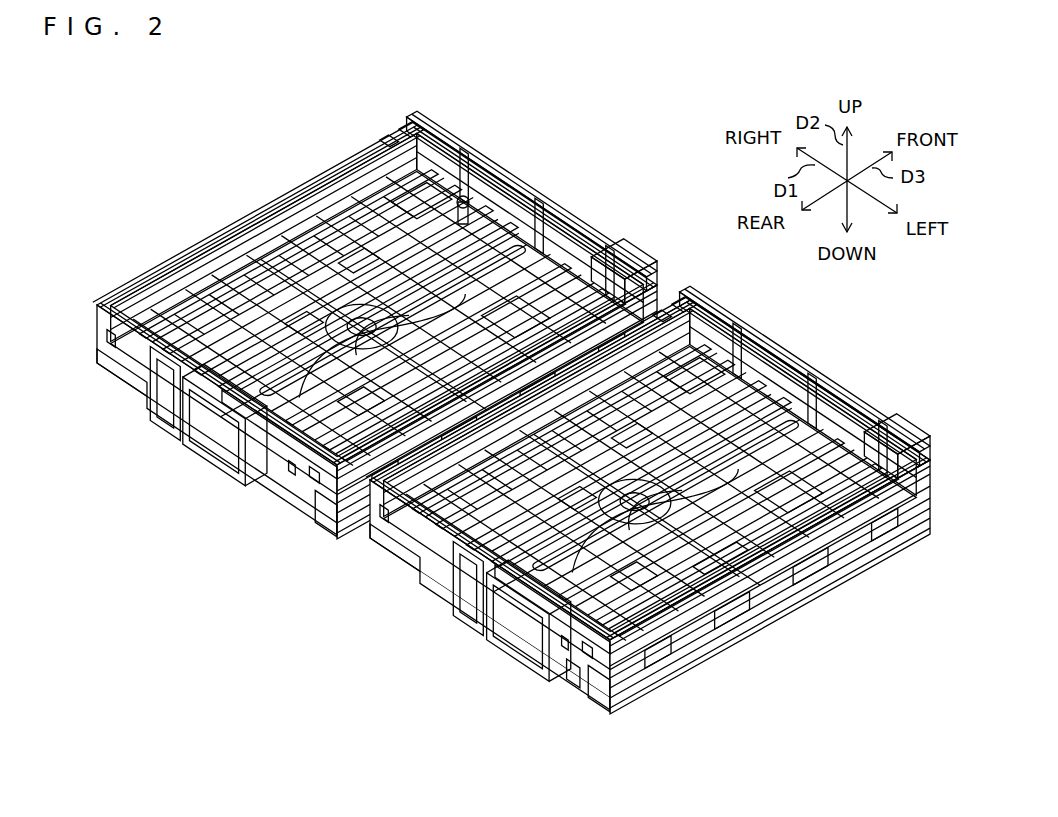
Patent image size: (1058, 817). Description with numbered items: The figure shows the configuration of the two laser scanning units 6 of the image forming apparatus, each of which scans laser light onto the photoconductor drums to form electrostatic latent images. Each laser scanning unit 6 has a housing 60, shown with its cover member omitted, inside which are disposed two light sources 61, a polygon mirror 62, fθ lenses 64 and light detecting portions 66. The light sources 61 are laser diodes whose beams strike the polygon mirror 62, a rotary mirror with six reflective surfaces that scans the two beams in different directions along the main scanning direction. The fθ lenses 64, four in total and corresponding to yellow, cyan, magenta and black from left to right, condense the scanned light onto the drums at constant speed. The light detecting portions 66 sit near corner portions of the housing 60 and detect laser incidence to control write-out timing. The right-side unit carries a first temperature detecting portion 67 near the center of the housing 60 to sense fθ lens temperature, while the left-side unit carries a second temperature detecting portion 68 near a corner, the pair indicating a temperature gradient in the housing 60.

The laser scanning unit 6 is at (590, 160).
The housing 60 is at (223, 225).
The light source 61 is at (468, 132).
The polygon mirror 62 is at (227, 380).
The fθ lens 64 is at (187, 352).
The light detecting portion 66 is at (387, 163).
The first temperature detecting portion 67 is at (463, 200).
The second temperature detecting portion 68 is at (580, 640).